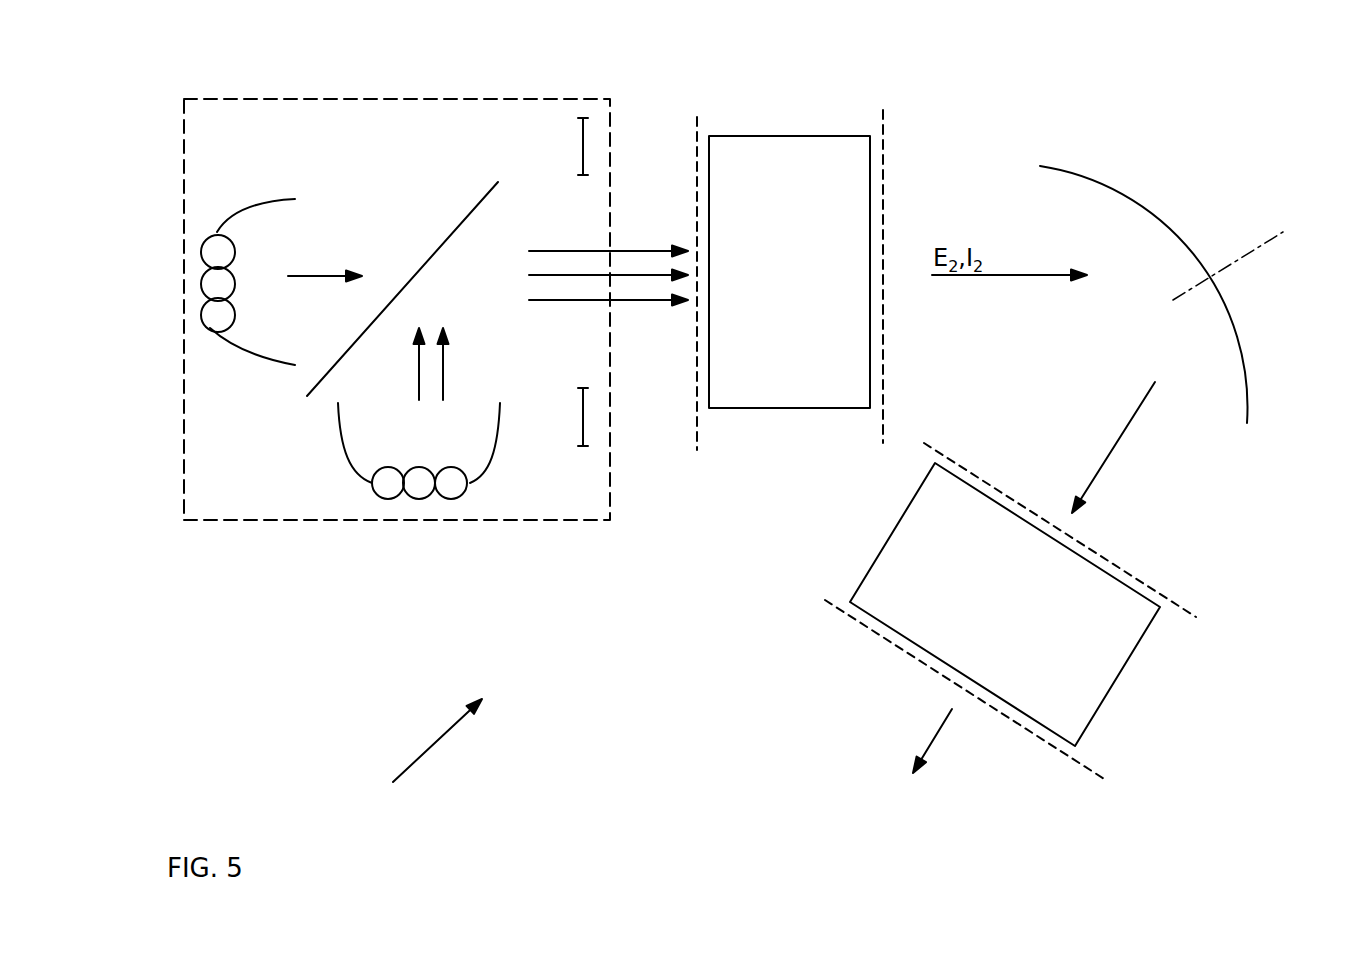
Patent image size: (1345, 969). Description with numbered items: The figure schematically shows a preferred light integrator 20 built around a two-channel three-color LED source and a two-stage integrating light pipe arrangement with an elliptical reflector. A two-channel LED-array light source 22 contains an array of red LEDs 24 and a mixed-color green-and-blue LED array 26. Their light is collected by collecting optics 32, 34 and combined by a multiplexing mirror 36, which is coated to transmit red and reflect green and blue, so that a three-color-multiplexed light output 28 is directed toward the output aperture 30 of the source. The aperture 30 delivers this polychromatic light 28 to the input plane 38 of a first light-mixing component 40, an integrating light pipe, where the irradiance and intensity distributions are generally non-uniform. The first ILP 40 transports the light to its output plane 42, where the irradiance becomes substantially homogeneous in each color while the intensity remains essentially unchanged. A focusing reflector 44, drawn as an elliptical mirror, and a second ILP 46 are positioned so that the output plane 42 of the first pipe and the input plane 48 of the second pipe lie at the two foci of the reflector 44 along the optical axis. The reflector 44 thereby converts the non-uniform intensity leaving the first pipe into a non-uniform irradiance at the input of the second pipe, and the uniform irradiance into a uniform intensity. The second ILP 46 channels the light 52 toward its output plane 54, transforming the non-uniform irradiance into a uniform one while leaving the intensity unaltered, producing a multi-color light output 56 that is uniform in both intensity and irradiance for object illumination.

The light integrator 20 is at (417, 750).
The two-channel LED-array light source 22 is at (233, 495).
The array of red LEDs 24 is at (179, 232).
The mixed-color green-and-blue LED array 26 is at (357, 528).
The light output 28 is at (653, 270).
The output aperture 30 is at (587, 135).
The collecting optics 32 is at (263, 198).
The collecting optics 34 is at (345, 450).
The multiplexing mirror 36 is at (498, 177).
The input plane 38 is at (697, 122).
The first light-mixing component 40 is at (802, 161).
The output plane 42 is at (883, 123).
The focusing reflector 44 is at (1093, 166).
The second ILP 46 is at (1068, 667).
The input plane 48 is at (1167, 598).
The light 52 is at (1133, 422).
The output plane 54 is at (1068, 758).
The multi-color light output 56 is at (947, 723).